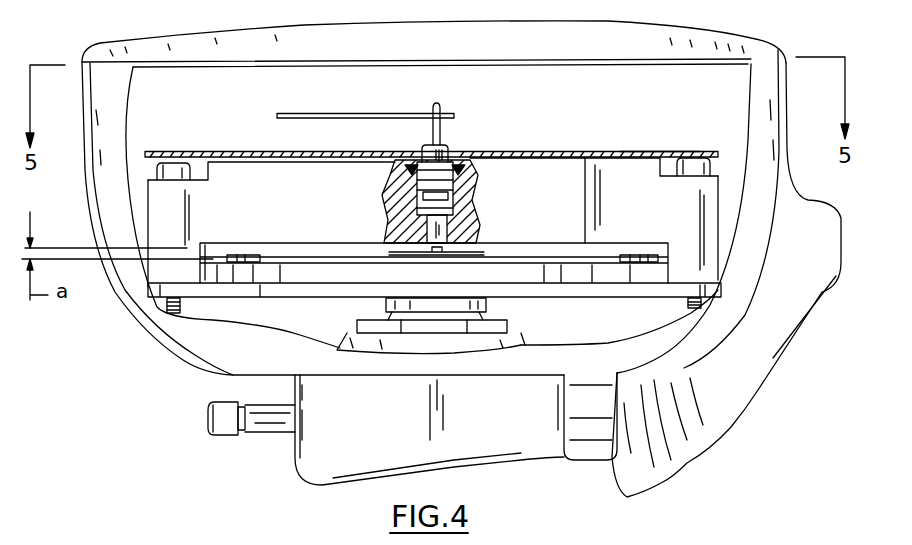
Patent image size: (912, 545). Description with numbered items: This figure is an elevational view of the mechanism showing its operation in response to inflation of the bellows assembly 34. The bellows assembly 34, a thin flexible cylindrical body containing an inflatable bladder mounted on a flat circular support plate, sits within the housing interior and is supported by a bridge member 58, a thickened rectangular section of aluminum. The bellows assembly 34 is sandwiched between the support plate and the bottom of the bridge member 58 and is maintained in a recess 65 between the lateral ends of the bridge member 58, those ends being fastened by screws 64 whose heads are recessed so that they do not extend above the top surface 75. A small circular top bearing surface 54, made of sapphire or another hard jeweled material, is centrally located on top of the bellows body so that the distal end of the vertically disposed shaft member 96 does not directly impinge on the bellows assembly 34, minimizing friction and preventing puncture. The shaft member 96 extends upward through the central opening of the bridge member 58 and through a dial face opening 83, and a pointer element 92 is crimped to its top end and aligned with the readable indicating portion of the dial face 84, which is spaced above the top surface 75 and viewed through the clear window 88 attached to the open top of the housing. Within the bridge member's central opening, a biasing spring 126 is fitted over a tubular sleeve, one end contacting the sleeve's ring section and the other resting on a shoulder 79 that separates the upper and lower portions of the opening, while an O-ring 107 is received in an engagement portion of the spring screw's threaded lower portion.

The bellows assembly 34 is at (267, 277).
The top bearing surface 54 is at (459, 255).
The bridge member 58 is at (708, 233).
The screws 64 is at (157, 163).
The recess 65 is at (642, 250).
The top surface 75 is at (620, 150).
The shoulder 79 is at (457, 218).
The dial face opening 83 is at (456, 148).
The dial face 84 is at (646, 148).
The window 88 is at (147, 40).
The pointer element 92 is at (329, 114).
The shaft member 96 is at (441, 128).
The O-ring 107 is at (407, 168).
The biasing spring 126 is at (419, 212).